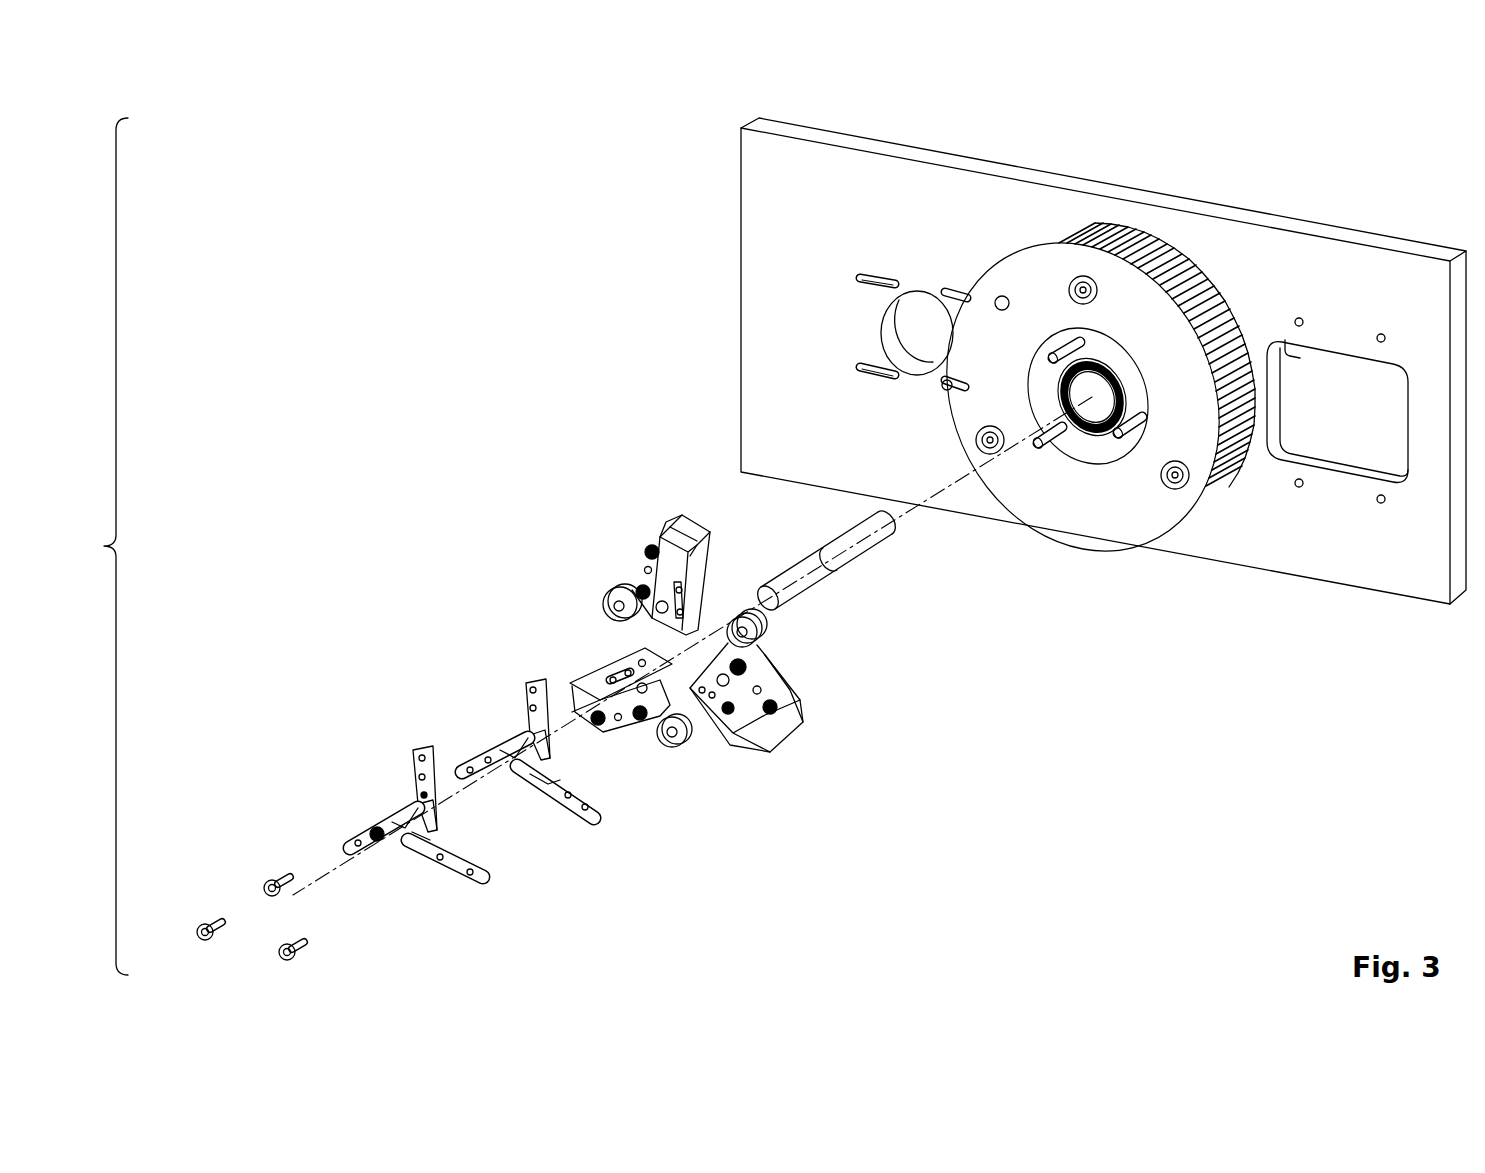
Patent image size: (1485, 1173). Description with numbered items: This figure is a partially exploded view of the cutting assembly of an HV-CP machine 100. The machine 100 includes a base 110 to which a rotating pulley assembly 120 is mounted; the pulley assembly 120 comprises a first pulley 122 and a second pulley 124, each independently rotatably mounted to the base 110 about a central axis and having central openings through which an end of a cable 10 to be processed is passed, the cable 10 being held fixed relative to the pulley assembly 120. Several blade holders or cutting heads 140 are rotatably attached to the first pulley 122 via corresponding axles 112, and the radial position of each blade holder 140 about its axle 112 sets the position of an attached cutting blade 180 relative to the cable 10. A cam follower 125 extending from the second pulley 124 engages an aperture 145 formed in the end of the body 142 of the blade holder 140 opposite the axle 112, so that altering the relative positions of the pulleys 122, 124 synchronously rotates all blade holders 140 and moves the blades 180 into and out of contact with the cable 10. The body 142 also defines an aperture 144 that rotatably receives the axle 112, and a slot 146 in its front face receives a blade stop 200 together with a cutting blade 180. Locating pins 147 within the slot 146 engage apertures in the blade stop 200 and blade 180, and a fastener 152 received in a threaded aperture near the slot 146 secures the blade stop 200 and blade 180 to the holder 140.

The HV-CP machine 100 is at (550, 96).
The base 110 is at (940, 228).
The rotating pulley assembly 120 is at (1175, 255).
The first pulley 122 is at (1180, 338).
The second pulley 124 is at (1205, 285).
The cam follower 125 is at (1083, 290).
The axle 112 is at (1105, 440).
The cable 10 is at (860, 545).
The blade holder 140 is at (610, 626).
The body 142 is at (640, 558).
The aperture 144 is at (778, 675).
The aperture 145 is at (700, 524).
The slot 146 is at (637, 565).
The locating pin 147 is at (757, 755).
The cutting blade 180 is at (415, 770).
The blade stop 200 is at (525, 700).
The fastener 152 is at (268, 880).